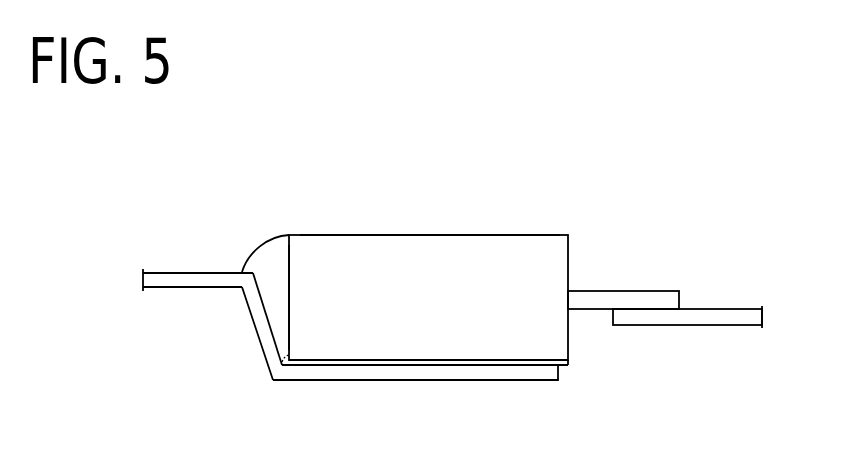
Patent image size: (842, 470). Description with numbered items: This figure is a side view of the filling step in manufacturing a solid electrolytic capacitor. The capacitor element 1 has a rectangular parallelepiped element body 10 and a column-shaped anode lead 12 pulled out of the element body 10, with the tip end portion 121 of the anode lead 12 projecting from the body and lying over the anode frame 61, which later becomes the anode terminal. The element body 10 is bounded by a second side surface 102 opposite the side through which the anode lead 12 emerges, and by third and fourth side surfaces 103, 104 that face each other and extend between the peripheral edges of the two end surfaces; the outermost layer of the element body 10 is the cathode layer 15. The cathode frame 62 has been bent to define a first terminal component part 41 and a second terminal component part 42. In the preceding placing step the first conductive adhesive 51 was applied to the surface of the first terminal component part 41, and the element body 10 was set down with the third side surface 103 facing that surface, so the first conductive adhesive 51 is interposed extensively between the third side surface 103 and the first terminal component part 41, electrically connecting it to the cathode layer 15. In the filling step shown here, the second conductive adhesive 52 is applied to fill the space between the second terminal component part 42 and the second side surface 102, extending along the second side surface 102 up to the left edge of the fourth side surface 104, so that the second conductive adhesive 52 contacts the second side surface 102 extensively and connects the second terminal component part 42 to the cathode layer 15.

The capacitor element 1 is at (421, 298).
The element body 10 is at (469, 235).
The second side surface 102 is at (284, 264).
The third side surface 103 is at (506, 368).
The fourth side surface 104 is at (373, 228).
The anode lead 12 is at (638, 268).
The tip end portion 121 is at (638, 300).
The cathode layer 15 is at (287, 335).
The first terminal component part 41 is at (332, 373).
The second terminal component part 42 is at (258, 321).
The first conductive adhesive 51 is at (384, 367).
The second conductive adhesive 52 is at (260, 262).
The anode frame 61 is at (737, 316).
The cathode frame 62 is at (183, 281).